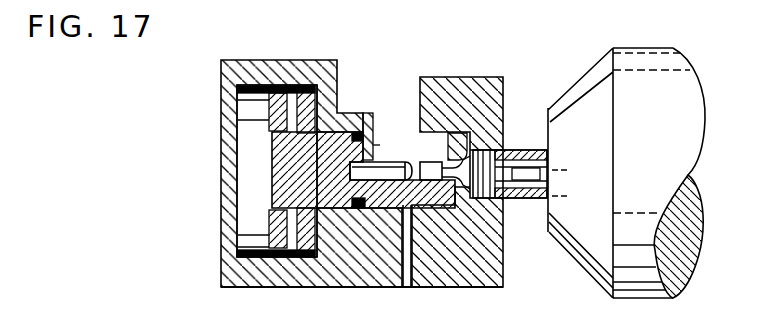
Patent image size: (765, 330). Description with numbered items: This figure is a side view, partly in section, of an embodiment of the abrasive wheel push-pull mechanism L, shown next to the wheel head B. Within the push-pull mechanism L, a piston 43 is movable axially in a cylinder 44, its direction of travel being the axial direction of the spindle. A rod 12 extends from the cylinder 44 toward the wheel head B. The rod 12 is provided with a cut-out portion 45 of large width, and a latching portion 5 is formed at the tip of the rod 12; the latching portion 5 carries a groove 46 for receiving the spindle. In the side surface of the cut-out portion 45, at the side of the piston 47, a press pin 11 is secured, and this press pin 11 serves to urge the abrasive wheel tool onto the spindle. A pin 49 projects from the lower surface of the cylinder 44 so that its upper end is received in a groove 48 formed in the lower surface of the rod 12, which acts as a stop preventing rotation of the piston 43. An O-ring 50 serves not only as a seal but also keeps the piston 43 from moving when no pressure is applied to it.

The abrasive wheel push-pull mechanism L is at (312, 267).
The piston 43 is at (279, 149).
The cylinder 44 is at (221, 84).
The piston 47 is at (290, 84).
The press pin 11 is at (348, 172).
The O-ring 50 is at (371, 108).
The cut-out portion 45 is at (440, 145).
The latching portion 5 is at (458, 133).
The groove 48 is at (458, 208).
The pin 49 is at (402, 255).
The rod 12 is at (430, 208).
The groove 46 is at (512, 150).
The wheel head B is at (634, 57).